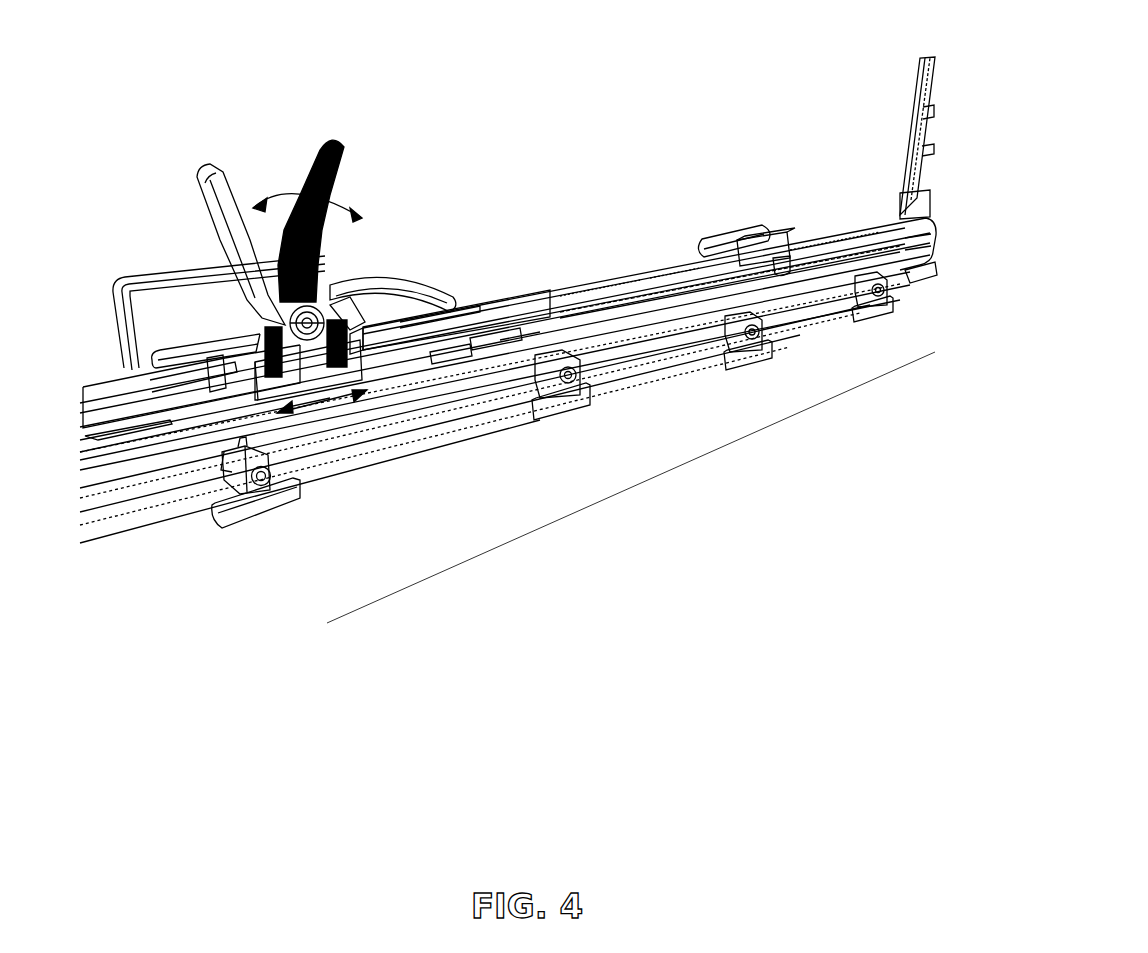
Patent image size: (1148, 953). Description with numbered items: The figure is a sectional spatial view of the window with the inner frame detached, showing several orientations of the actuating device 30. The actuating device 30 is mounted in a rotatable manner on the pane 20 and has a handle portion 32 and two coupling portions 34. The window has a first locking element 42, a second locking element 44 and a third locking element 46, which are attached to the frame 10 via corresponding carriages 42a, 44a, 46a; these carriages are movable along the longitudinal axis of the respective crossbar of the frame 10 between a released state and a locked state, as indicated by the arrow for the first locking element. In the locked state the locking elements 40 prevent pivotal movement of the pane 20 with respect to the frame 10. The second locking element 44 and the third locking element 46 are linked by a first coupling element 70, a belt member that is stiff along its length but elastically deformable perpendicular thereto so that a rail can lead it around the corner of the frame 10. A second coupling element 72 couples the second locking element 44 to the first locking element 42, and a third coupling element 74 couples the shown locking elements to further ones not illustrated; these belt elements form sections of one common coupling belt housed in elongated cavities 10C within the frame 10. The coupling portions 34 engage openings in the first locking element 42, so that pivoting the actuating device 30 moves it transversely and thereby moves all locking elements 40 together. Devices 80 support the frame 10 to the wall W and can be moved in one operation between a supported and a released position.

The frame 10 is at (668, 340).
The elongated cavities 10C is at (512, 348).
The pane 20 is at (175, 217).
The actuating device 30 is at (350, 253).
The handle portion 32 is at (320, 163).
The coupling portions 34 is at (263, 378).
The locking elements 40 is at (632, 323).
The first locking element 42 is at (338, 378).
The carriage 42a is at (375, 362).
The second locking element 44 is at (750, 258).
The carriage 44a is at (737, 273).
The third locking element 46 is at (921, 112).
The carriage 46a is at (922, 150).
The first coupling element 70 is at (862, 240).
The second coupling element 72 is at (573, 322).
The third coupling element 74 is at (118, 428).
The devices 80 is at (203, 527).
The wall W is at (293, 572).